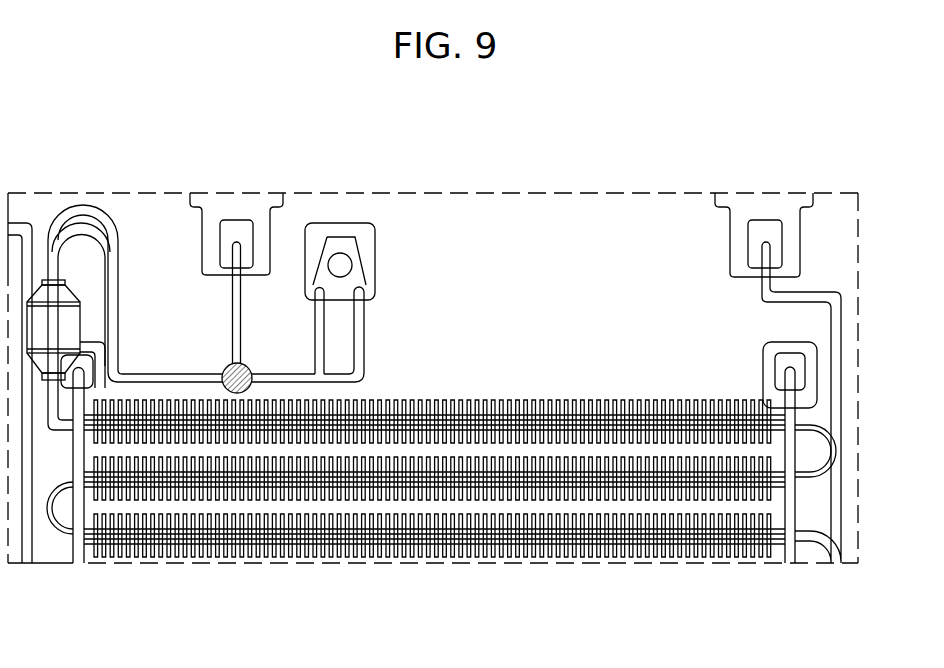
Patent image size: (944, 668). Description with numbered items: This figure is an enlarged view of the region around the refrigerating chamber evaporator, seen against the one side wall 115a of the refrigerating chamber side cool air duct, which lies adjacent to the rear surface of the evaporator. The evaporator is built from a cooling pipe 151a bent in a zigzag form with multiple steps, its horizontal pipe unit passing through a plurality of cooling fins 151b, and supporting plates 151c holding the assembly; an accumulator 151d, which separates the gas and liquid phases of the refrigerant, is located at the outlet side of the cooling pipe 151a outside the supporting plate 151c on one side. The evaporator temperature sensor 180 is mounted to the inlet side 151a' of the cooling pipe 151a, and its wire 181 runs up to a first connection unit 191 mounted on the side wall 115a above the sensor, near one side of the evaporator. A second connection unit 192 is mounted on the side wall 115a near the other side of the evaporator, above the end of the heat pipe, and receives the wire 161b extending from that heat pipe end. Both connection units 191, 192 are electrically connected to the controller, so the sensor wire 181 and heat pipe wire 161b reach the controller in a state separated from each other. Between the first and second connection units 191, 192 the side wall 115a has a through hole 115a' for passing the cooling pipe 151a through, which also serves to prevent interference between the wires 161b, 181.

The one side wall 115a is at (433, 345).
The through hole 115a' is at (318, 250).
The cooling pipe 151a is at (837, 519).
The inlet side of the cooling pipe 151a' is at (399, 224).
The cooling fins 151b is at (666, 550).
The supporting plate 151c is at (792, 557).
The accumulator 151d is at (38, 313).
The wire 161b is at (837, 337).
The evaporator temperature sensor 180 is at (238, 385).
The wire 181 is at (235, 313).
The first connection unit 191 is at (228, 203).
The second connection unit 192 is at (763, 205).